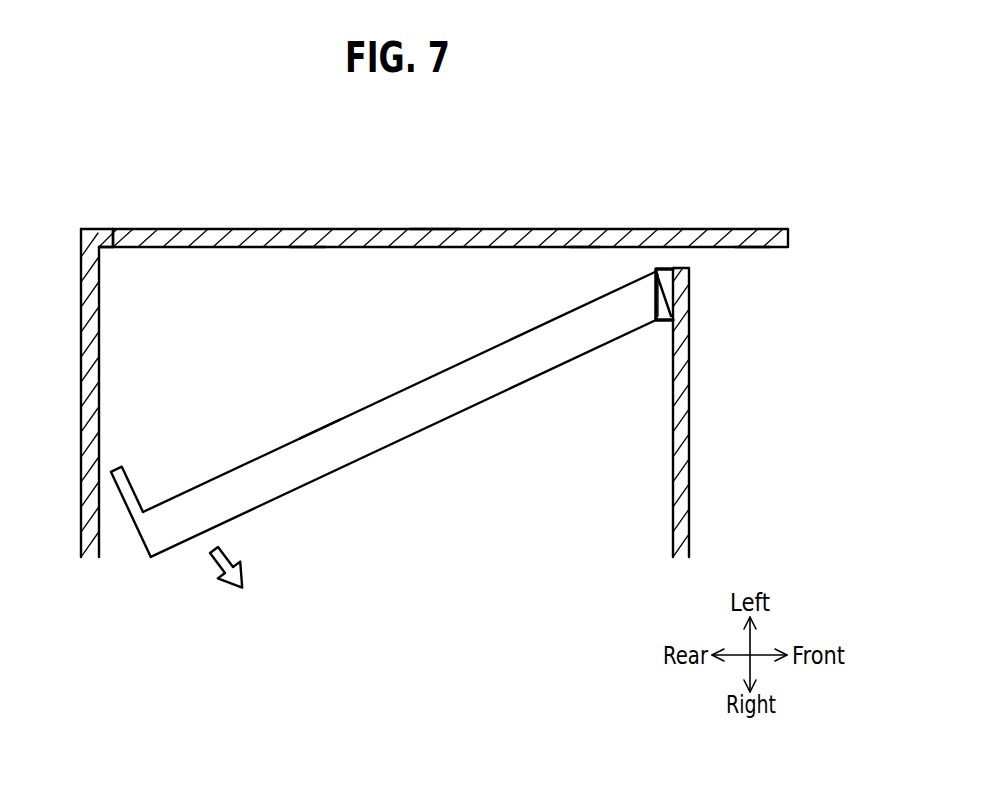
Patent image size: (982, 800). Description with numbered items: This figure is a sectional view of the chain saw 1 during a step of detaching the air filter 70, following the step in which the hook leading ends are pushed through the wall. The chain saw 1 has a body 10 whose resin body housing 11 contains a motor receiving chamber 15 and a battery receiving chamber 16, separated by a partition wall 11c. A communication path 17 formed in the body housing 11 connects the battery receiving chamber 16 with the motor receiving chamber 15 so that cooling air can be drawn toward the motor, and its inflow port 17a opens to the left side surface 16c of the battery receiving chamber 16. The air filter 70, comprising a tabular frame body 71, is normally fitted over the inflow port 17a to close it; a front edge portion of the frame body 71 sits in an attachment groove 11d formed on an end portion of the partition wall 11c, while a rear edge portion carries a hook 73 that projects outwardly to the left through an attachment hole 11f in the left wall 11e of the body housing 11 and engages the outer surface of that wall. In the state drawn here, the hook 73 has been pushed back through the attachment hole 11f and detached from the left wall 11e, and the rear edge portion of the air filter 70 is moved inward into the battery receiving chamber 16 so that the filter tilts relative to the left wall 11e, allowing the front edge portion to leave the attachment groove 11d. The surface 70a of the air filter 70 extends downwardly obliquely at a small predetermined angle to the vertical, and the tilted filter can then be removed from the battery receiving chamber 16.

The chain saw 1 is at (233, 141).
The body 10 is at (488, 206).
The body housing 11 is at (375, 228).
The partition wall 11c is at (690, 352).
The attachment groove 11d is at (662, 292).
The left wall 11e is at (432, 228).
The attachment hole 11f is at (112, 246).
The motor receiving chamber 15 is at (758, 249).
The battery receiving chamber 16 is at (98, 412).
The left side surface 16c is at (311, 246).
The communication path 17 is at (578, 251).
The inflow port 17a is at (655, 271).
The air filter 70 is at (441, 442).
The surface of the air filter 70a is at (510, 389).
The tabular frame body 71 is at (318, 465).
The hook 73 is at (133, 485).